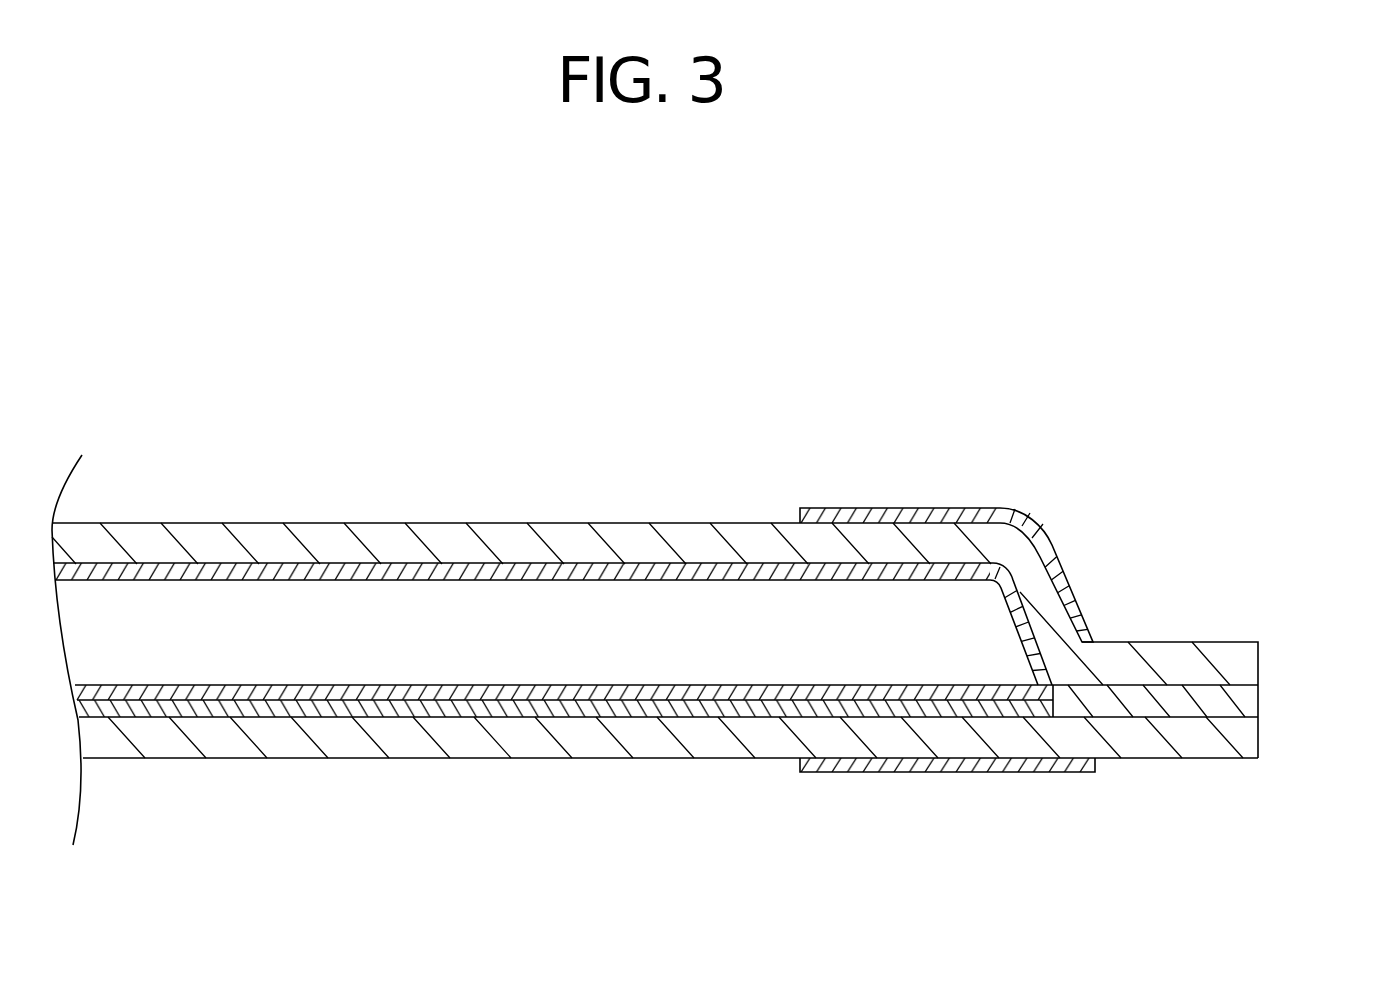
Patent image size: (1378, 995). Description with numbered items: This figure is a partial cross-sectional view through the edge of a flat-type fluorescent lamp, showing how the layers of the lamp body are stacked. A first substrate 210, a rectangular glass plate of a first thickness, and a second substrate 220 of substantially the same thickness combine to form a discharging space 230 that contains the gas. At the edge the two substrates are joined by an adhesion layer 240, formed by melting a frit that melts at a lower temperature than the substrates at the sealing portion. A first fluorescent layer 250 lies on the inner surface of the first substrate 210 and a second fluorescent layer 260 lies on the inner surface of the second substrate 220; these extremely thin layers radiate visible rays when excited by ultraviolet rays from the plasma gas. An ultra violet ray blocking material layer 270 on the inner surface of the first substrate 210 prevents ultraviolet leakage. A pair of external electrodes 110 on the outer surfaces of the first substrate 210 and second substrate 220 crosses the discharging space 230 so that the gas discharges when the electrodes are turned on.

The external electrode 110 is at (883, 508).
The first substrate 210 is at (1248, 740).
The second substrate 220 is at (1248, 663).
The discharging space 230 is at (470, 620).
The adhesion layer 240 is at (1248, 698).
The first fluorescent layer 250 is at (411, 698).
The second fluorescent layer 260 is at (593, 565).
The ultra violet ray blocking material layer 270 is at (554, 708).